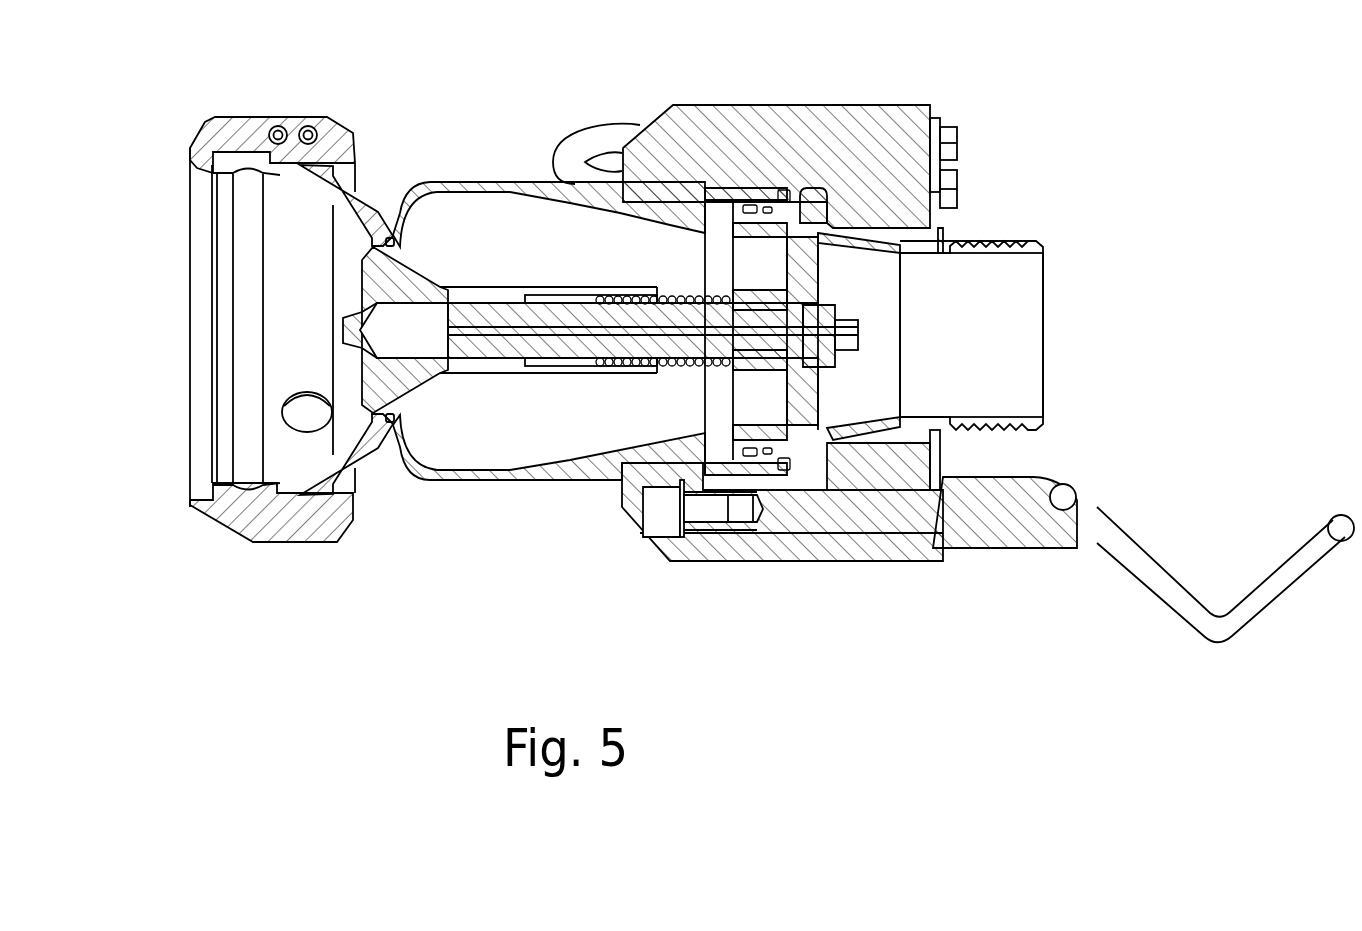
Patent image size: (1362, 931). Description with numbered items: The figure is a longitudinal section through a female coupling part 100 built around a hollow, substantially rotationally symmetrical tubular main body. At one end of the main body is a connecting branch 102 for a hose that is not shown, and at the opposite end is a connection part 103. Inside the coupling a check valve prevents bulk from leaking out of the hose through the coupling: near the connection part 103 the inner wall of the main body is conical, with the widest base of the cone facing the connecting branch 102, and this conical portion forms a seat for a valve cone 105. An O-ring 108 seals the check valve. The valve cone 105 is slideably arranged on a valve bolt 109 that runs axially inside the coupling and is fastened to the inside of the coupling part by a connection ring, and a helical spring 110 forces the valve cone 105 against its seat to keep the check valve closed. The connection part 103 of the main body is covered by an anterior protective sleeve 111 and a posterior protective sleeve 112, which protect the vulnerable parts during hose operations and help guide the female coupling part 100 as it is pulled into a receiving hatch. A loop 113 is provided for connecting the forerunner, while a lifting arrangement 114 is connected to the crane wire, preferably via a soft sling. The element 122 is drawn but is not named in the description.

The female coupling part 100 is at (287, 632).
The connecting branch 102 is at (1035, 240).
The connection part 103 is at (165, 560).
The valve cone 105 is at (381, 226).
The O-ring 108 is at (395, 420).
The valve bolt 109 is at (582, 351).
The helical spring 110 is at (668, 372).
The anterior protective sleeve 111 is at (233, 140).
The posterior protective sleeve 112 is at (790, 166).
The loop 113 is at (580, 130).
The lifting arrangement 114 is at (1057, 578).
The inner tube 122 is at (248, 380).